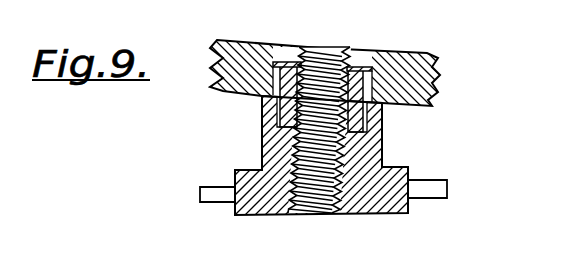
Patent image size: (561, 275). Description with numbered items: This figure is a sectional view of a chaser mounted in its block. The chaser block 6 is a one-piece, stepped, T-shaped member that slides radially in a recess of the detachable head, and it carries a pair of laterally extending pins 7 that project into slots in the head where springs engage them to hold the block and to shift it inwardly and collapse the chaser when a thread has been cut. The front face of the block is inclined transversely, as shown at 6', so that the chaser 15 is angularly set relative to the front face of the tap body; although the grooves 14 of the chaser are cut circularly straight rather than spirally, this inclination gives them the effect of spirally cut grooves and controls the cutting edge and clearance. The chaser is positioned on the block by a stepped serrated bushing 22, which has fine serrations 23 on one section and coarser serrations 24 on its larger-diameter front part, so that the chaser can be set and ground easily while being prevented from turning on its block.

The chaser block 6 is at (338, 131).
The inclined front face of the supporting block 6' is at (366, 113).
The laterally extending pins 7 is at (210, 192).
The grooves 14 is at (438, 70).
The chaser 15 is at (408, 88).
The stepped serrated bushing 22 is at (263, 99).
The serrations 23 is at (262, 137).
The serrations 24 is at (271, 82).